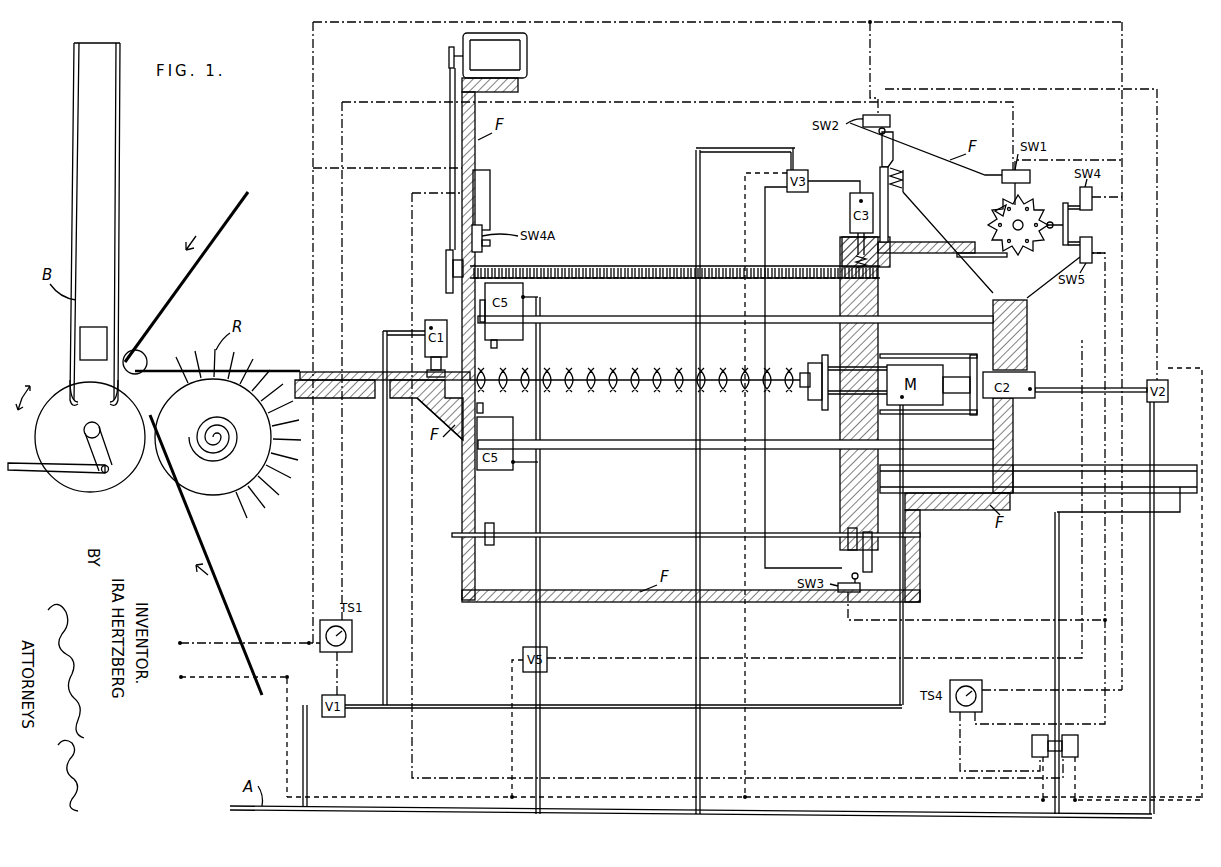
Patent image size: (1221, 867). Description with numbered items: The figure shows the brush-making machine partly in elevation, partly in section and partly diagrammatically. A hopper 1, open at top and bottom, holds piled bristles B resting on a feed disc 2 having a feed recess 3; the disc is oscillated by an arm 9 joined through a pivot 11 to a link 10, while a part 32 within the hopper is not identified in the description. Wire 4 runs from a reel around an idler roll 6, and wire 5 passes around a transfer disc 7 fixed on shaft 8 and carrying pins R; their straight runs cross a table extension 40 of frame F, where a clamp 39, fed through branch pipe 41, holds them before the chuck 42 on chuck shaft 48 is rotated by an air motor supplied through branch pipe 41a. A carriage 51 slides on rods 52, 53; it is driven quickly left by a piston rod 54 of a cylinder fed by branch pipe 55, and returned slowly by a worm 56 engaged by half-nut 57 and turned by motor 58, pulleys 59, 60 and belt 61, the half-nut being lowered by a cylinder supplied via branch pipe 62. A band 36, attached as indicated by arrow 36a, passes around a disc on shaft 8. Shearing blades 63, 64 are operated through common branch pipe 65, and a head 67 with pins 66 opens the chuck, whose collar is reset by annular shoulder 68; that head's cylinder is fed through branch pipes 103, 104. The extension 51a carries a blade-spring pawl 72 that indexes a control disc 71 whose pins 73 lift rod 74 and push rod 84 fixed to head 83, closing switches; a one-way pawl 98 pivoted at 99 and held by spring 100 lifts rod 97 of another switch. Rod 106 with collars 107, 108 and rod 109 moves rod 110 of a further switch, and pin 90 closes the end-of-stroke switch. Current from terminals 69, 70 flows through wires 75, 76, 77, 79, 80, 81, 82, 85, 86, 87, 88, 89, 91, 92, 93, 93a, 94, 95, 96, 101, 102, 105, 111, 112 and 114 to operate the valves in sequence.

The hopper 1 is at (121, 141).
The feed disc 2 is at (36, 438).
The feed recess 3 is at (68, 382).
The wire 4 is at (233, 215).
The wire 5 is at (217, 590).
The idler roll 6 is at (143, 358).
The transfer disc 7 is at (245, 470).
The shaft 8 is at (216, 446).
The arm 9 is at (113, 456).
The link 10 is at (30, 473).
The pivot 11 is at (104, 474).
The article 32 is at (107, 336).
The flexible band 36 is at (239, 406).
The arrow 36a is at (840, 420).
The clamp 39 is at (427, 373).
The table extension 40 is at (354, 400).
The branch pipe 41 is at (384, 510).
The branch pipe 41a is at (606, 705).
The chuck 42 is at (809, 367).
The chuck shaft 48 is at (870, 367).
The carriage 51 is at (840, 482).
The extension 51a is at (905, 254).
The longitudinal rods 52 is at (695, 316).
The longitudinal rods 53 is at (652, 449).
The piston rod 54 is at (878, 476).
The branch pipe 55 is at (1055, 568).
The worm 56 is at (612, 264).
The half-nut 57 is at (842, 250).
The motor 58 is at (528, 58).
The pulley 59 is at (448, 60).
The pulley 60 is at (446, 265).
The belt 61 is at (450, 132).
The branch pipe 62 is at (696, 201).
The shearing blade 63 is at (483, 411).
The shearing blade 64 is at (497, 345).
The common branch pipe 65 is at (543, 531).
The pins 66 is at (925, 354).
The head 67 is at (993, 310).
The annular shoulder 68 is at (455, 432).
The positive terminal 69 is at (176, 643).
The negative terminal 70 is at (181, 680).
The control disc 71 is at (991, 227).
The blade-spring pawl 72 is at (978, 259).
The switch-operating pins 73 is at (995, 211).
The rod 74 is at (1027, 198).
The wire 75 is at (312, 105).
The wire 76 is at (1008, 27).
The wire 77 is at (1120, 115).
The wire 79 is at (667, 107).
The wire 80 is at (344, 246).
The wire 81 is at (341, 670).
The wire 82 is at (308, 648).
The common head 83 is at (1062, 231).
The longitudinal left rod 84 is at (1062, 246).
The wire 85 is at (1112, 197).
The wire 86 is at (1000, 690).
The wire 87 is at (958, 742).
The wire 88 is at (350, 795).
The wire 89 is at (1000, 725).
The pin 90 is at (489, 246).
The wire 91 is at (490, 193).
The wire 92 is at (412, 206).
The wire 93 is at (1077, 790).
The wire 93a is at (1040, 790).
The wire 94 is at (1104, 264).
The wire 95 is at (706, 658).
The wire 96 is at (510, 736).
The switch rod 97 is at (886, 132).
The one-way pawl 98 is at (895, 146).
The pivot 99 is at (885, 166).
The compression spring 100 is at (900, 196).
The wire 101 is at (868, 52).
The wire 102 is at (928, 89).
The branch pipe 103 is at (1052, 393).
The branch pipe 104 is at (1157, 438).
The wire 105 is at (1202, 541).
The rod 106 is at (652, 533).
The collar 107 is at (492, 524).
The collar 108 is at (848, 534).
The rod 109 is at (875, 558).
The switch rod 110 is at (852, 572).
The wire 111 is at (1015, 620).
The wire 112 is at (768, 219).
The wire 114 is at (745, 215).